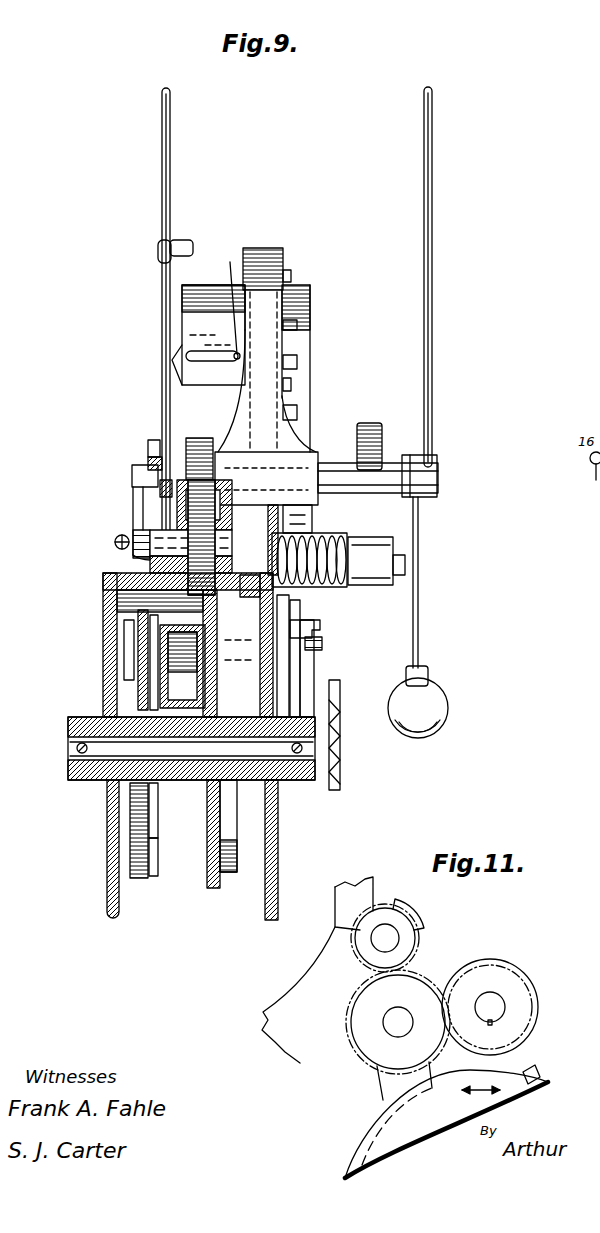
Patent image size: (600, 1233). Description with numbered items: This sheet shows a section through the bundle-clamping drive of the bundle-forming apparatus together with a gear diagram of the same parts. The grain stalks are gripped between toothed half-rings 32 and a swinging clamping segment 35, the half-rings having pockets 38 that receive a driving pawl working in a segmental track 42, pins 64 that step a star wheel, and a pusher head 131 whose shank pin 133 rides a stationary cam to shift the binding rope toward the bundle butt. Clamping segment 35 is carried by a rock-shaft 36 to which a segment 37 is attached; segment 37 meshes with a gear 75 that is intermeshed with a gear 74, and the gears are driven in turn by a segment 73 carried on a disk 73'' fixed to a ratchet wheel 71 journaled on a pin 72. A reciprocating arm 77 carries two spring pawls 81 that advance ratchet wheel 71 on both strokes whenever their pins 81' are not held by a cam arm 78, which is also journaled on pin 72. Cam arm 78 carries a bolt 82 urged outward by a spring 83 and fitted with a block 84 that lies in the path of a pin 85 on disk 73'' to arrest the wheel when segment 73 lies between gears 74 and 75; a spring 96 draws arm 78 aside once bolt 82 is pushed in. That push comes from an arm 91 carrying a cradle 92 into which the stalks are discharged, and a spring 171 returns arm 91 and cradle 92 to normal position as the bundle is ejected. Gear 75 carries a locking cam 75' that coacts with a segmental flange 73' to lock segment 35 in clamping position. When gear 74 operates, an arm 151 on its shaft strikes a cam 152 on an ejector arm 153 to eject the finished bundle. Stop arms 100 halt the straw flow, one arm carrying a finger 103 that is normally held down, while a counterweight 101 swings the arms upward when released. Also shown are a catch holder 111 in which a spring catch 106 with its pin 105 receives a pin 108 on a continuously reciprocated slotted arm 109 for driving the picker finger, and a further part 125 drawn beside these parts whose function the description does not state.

In FIG. 9, the stop arms 100 is at (170, 153).
In FIG. 9, the finger 103 is at (192, 242).
In FIG. 9, the pin 133 is at (213, 302).
In FIG. 9, the clamping segment 35 is at (268, 256).
In FIG. 9, the pins 64 is at (291, 276).
In FIG. 9, the half-ring 32 is at (310, 300).
In FIG. 11, the half-ring 32 is at (335, 912).
In FIG. 9, the teeth or pockets 38 is at (297, 352).
In FIG. 9, the pusher head 131 is at (172, 362).
In FIG. 9, the rock-shaft 36 is at (333, 470).
In FIG. 9, the cradle 92 is at (380, 432).
In FIG. 9, the segment 37 is at (196, 440).
In FIG. 11, the segment 37 is at (418, 920).
In FIG. 9, the ejector arm 153 is at (148, 447).
In FIG. 9, the cam 152 is at (148, 463).
In FIG. 9, the arm 151 is at (132, 475).
In FIG. 9, the gear 74 is at (185, 520).
In FIG. 11, the gear 74 is at (497, 970).
In FIG. 9, the spring 96 is at (115, 542).
In FIG. 9, the gear 75 is at (137, 537).
In FIG. 11, the gear 75 is at (398, 1013).
In FIG. 9, the locking cam 75' is at (236, 592).
In FIG. 11, the locking cam 75' is at (372, 1082).
In FIG. 9, the segment 73 is at (223, 653).
In FIG. 11, the segment 73 is at (544, 1057).
In FIG. 9, the ratchet wheel 71 is at (103, 625).
In FIG. 9, the block 84 is at (124, 655).
In FIG. 9, the bolt 82 is at (140, 680).
In FIG. 9, the spring 83 is at (150, 700).
In FIG. 9, the pin 85 is at (166, 648).
In FIG. 9, the pin 72 is at (70, 750).
In FIG. 9, the reciprocating arm 77 is at (117, 808).
In FIG. 9, the cam arm 78 is at (160, 820).
In FIG. 9, the spring pawls 81 is at (103, 834).
In FIG. 9, the pins 81' is at (173, 858).
In FIG. 9, the disk 73'' is at (220, 854).
In FIG. 9, the segmental flange 73' is at (257, 854).
In FIG. 11, the segmental flange 73' is at (424, 1124).
In FIG. 9, the pin 108 is at (298, 668).
In FIG. 9, the slotted arm 109 is at (300, 686).
In FIG. 9, the catch holder 111 is at (310, 706).
In FIG. 9, the spring catch 106 is at (318, 628).
In FIG. 9, the pin 105 is at (322, 645).
In FIG. 9, the rack 125 is at (338, 790).
In FIG. 9, the spring 171 is at (330, 545).
In FIG. 9, the segmental track 42 is at (322, 588).
In FIG. 9, the arm 91 is at (380, 565).
In FIG. 9, the counterweight 101 is at (448, 700).